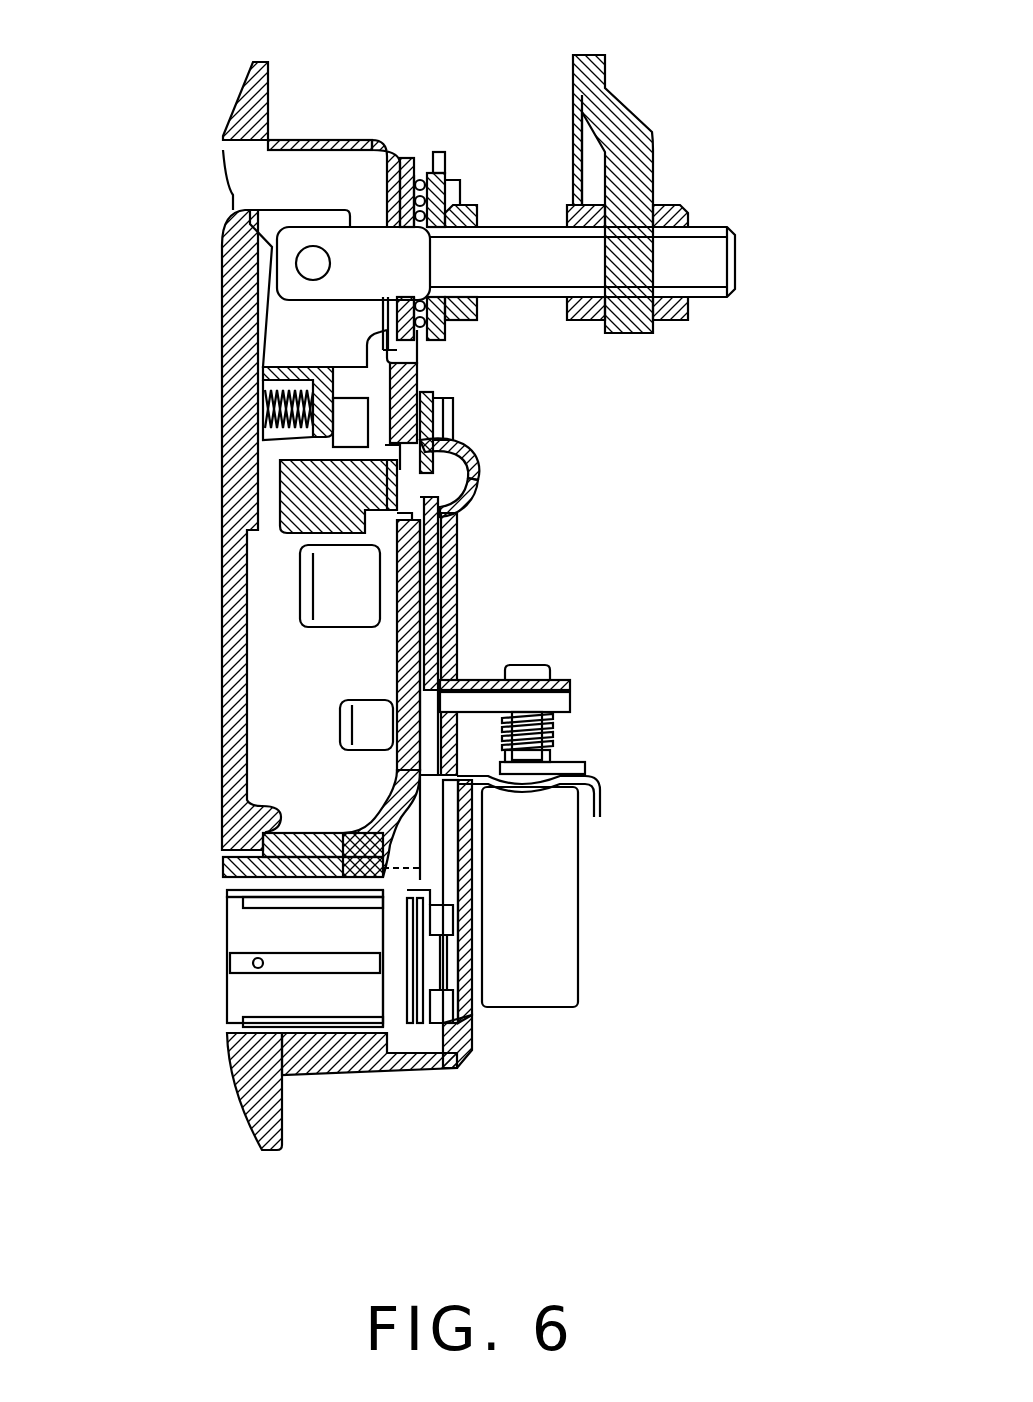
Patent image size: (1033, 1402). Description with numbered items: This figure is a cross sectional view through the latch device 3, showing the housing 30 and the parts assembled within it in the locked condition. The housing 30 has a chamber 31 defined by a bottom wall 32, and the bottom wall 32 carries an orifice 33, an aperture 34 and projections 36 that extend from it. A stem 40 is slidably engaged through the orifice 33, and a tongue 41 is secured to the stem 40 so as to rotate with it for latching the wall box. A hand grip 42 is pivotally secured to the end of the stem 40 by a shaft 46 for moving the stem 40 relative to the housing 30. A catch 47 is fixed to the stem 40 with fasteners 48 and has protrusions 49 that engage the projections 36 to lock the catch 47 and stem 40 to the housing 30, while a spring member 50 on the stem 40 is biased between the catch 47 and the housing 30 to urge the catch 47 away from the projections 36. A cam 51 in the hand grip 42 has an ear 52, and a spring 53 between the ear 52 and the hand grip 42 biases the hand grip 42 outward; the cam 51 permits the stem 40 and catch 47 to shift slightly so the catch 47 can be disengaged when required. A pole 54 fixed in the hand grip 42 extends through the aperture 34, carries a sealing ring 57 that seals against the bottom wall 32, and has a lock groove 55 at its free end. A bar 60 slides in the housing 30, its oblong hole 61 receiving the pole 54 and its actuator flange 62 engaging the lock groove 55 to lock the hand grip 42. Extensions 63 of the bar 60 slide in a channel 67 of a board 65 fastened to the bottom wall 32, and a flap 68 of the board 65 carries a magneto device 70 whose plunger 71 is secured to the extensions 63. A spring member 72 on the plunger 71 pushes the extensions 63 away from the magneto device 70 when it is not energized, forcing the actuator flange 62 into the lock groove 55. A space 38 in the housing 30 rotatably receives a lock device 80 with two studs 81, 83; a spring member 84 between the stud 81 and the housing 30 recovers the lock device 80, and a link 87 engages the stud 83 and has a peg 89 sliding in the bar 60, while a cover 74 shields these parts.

The latch device 3 is at (452, 76).
The housing 30 is at (300, 140).
The chamber 31 is at (297, 700).
The bottom wall 32 is at (455, 657).
The orifice 33 is at (404, 163).
The aperture 34 is at (453, 430).
The projections 36 is at (412, 152).
The space 38 is at (230, 1065).
The stem 40 is at (707, 247).
The tongue 41 is at (623, 118).
The hand grip 42 is at (385, 818).
The shaft 46 is at (296, 266).
The catch 47 is at (450, 187).
The fasteners 48 is at (478, 214).
The protrusions 49 is at (444, 150).
The spring member 50 is at (460, 327).
The cam 51 is at (287, 330).
The ear 52 is at (295, 447).
The spring 53 is at (300, 400).
The pole 54 is at (290, 500).
The lock groove 55 is at (480, 519).
The sealing ring 57 is at (387, 537).
The bar 60 is at (480, 600).
The oblong hole 61 is at (478, 443).
The actuator flange 62 is at (480, 560).
The extensions 63 is at (567, 683).
The board 65 is at (480, 635).
The channel 67 is at (450, 735).
The flap 68 is at (577, 773).
The magneto device 70 is at (570, 890).
The plunger 71 is at (535, 720).
The spring member 72 is at (555, 740).
The cover 74 is at (455, 1068).
The lock device 80 is at (240, 987).
The stud 81 is at (457, 1068).
The stud 83 is at (453, 937).
The spring member 84 is at (423, 1023).
The link 87 is at (443, 920).
The peg 89 is at (433, 827).